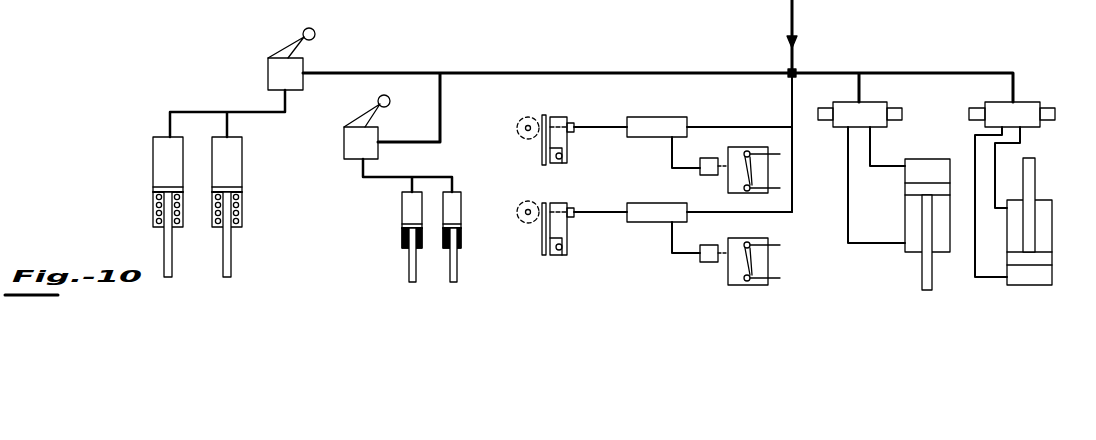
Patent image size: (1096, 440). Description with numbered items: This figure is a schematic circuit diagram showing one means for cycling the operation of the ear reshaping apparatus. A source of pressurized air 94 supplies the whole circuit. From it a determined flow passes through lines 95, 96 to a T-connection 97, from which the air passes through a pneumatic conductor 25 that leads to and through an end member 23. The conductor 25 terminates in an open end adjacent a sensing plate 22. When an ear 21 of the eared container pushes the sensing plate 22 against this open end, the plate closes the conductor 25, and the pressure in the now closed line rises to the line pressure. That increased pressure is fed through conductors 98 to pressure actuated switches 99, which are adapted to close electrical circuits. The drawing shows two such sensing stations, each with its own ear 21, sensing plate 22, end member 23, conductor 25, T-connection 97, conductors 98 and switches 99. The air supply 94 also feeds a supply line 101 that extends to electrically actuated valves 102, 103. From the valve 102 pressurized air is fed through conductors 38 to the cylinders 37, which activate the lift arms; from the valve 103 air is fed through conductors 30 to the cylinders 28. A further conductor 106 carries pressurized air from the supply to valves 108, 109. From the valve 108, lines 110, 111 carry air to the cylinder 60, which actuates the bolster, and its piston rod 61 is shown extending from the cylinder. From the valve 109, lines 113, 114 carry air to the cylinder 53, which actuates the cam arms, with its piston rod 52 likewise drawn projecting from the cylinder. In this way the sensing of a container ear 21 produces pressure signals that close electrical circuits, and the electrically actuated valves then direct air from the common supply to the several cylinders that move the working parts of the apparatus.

The ear 21 is at (522, 118).
The sensing plate 22 is at (553, 94).
The end member 23 is at (560, 115).
The pneumatic conductor 25 is at (590, 127).
The cylinders 28 is at (402, 228).
The conductors 30 is at (385, 179).
The cylinders 37 is at (155, 166).
The conductors 38 is at (168, 116).
The piston rod 52 is at (1035, 181).
The cylinder 53 is at (1052, 232).
The cylinder 60 is at (905, 210).
The piston rod 61 is at (922, 272).
The source of pressurized air 94 is at (796, 12).
The line 95 is at (727, 127).
The line 96 is at (775, 213).
The T-connection 97 is at (648, 117).
The conductors 98 is at (672, 162).
The pressure actuated switches 99 is at (728, 190).
The supply line 101 is at (638, 72).
The electrically actuated valve 102 is at (305, 64).
The electrically actuated valve 103 is at (344, 144).
The conductor 106 is at (923, 70).
The valve 108 is at (868, 102).
The valve 109 is at (1020, 101).
The line 110 is at (848, 163).
The line 111 is at (870, 145).
The line 113 is at (975, 142).
The line 114 is at (1021, 135).